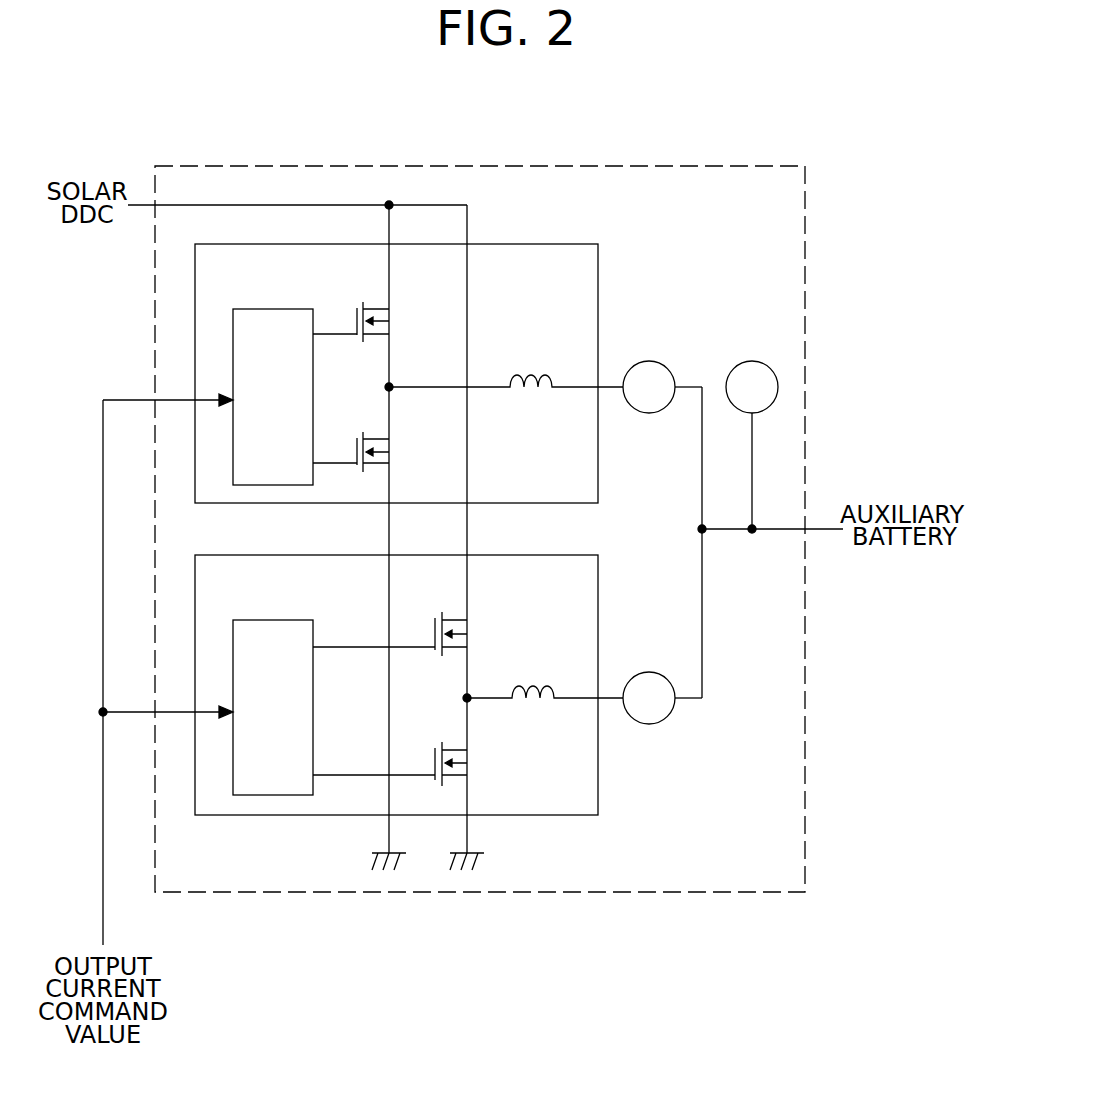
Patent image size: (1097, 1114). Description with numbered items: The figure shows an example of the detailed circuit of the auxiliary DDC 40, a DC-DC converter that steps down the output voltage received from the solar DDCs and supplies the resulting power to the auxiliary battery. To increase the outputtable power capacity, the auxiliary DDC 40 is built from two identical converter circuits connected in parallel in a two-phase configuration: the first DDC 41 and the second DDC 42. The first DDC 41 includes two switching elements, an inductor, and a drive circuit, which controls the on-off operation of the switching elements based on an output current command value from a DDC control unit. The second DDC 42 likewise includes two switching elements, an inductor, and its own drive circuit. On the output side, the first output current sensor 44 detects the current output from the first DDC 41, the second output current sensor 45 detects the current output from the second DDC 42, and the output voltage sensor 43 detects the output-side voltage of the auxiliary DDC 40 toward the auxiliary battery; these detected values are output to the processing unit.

The auxiliary DDC 40 is at (703, 165).
The first DDC 41 is at (598, 300).
The second DDC 42 is at (598, 607).
The output voltage sensor 43 is at (753, 361).
The first output current sensor 44 is at (650, 361).
The second output current sensor 45 is at (651, 672).